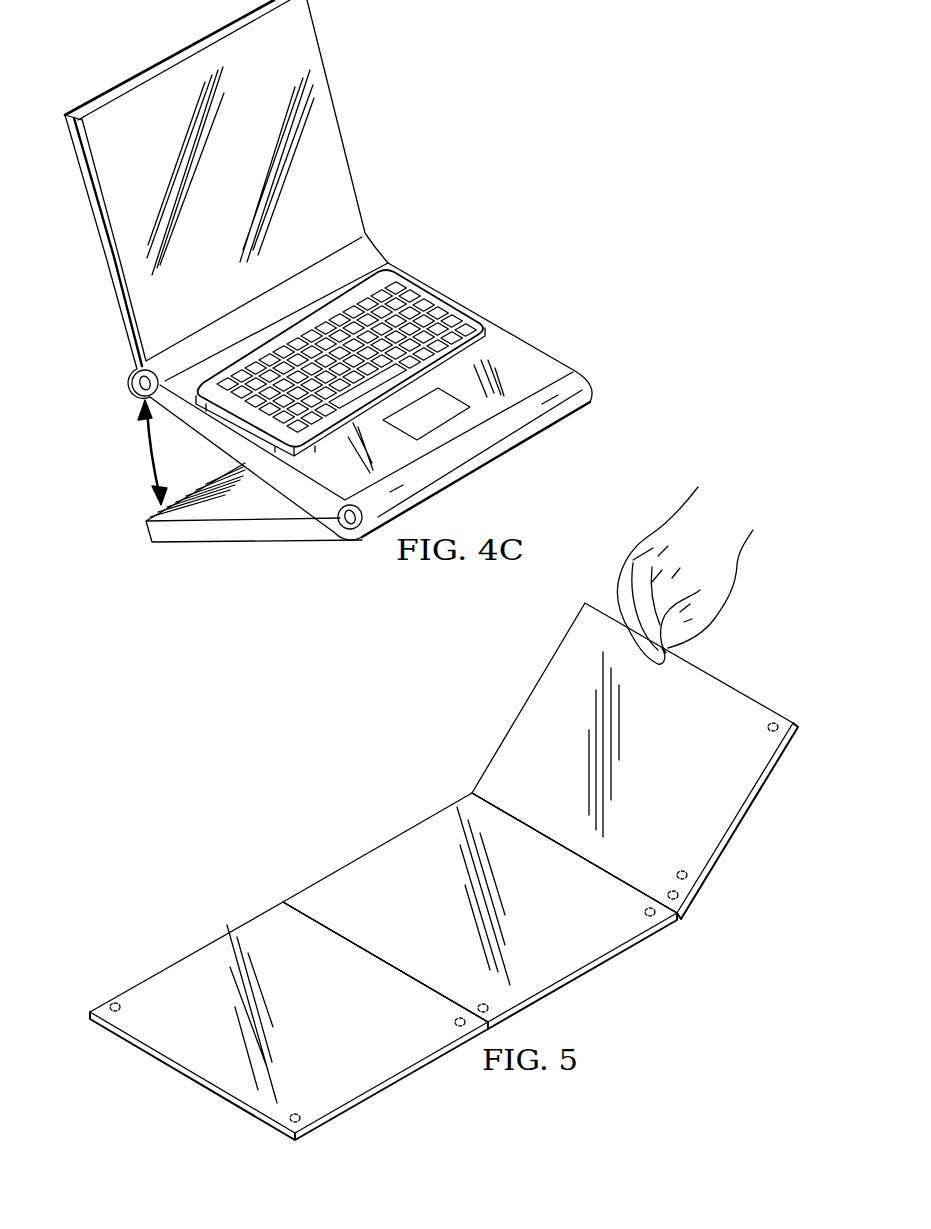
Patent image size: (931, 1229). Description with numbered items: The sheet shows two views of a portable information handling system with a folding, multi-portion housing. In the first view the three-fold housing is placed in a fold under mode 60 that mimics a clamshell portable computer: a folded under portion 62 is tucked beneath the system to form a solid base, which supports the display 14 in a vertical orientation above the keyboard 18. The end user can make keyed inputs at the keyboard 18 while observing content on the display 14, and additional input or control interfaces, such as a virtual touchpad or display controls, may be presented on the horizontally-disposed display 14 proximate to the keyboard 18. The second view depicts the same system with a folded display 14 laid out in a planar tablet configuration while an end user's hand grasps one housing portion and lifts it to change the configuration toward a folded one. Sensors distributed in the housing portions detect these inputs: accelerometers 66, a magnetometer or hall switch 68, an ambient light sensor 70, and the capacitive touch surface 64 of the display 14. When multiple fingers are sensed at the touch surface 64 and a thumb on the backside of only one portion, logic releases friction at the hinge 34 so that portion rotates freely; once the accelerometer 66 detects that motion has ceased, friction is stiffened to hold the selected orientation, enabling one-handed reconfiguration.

In FIG. 4C, the display 14 is at (330, 127).
In FIG. 5, the display 14 is at (200, 943).
In FIG. 4C, the keyboard 18 is at (452, 291).
In FIG. 4C, the fold under mode 60 is at (328, 319).
In FIG. 4C, the folded under portion 62 is at (258, 546).
In FIG. 5, the hinge 34 is at (471, 795).
In FIG. 5, the capacitive touch surface 64 is at (368, 864).
In FIG. 5, the accelerometer 66 is at (298, 1112).
In FIG. 5, the magnetometer or hall switch 68 is at (688, 873).
In FIG. 5, the ambient light sensor 70 is at (112, 1001).